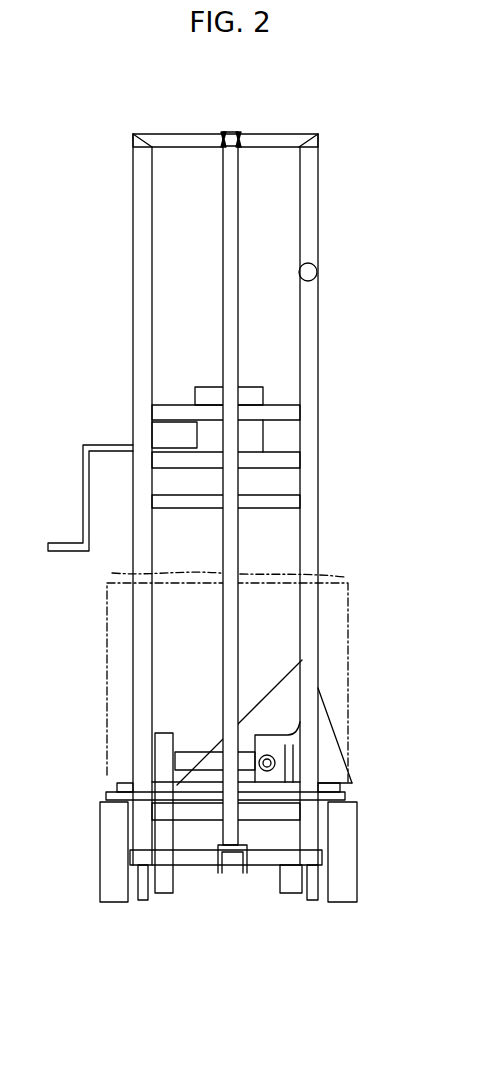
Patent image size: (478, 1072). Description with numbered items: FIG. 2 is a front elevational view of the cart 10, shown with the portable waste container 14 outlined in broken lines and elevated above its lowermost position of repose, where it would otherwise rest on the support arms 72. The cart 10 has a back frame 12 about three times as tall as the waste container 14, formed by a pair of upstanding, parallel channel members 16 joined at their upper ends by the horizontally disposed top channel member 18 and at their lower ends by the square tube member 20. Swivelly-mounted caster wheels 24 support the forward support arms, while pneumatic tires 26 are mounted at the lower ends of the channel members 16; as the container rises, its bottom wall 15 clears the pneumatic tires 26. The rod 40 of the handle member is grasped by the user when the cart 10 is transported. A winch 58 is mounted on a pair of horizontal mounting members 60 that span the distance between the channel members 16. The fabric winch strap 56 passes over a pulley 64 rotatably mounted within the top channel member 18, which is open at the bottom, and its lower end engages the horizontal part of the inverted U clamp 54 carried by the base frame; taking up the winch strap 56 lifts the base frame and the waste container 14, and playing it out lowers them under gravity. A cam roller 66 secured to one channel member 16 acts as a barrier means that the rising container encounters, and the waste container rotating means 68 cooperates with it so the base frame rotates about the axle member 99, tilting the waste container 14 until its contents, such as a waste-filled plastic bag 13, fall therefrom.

The cart 10 is at (107, 203).
The back frame 12 is at (316, 378).
The waste-filled plastic bag 13 is at (262, 574).
The portable waste container 14 is at (116, 615).
The bottom wall 15 is at (184, 805).
The upstanding channel member 16 is at (133, 298).
The top channel member 18 is at (204, 148).
The square tube member 20 is at (183, 858).
The caster wheel 24 is at (145, 886).
The pneumatic tire 26 is at (110, 818).
The rod 40 is at (68, 553).
The inverted U clamp 54 is at (240, 848).
The winch strap 56 is at (223, 300).
The winch 58 is at (152, 428).
The mounting member 60 is at (163, 405).
The pulley 64 is at (243, 135).
The cam roller 66 is at (317, 270).
The waste container rotating means 68 is at (289, 670).
The support arm 72 is at (106, 792).
The axle member 99 is at (290, 755).